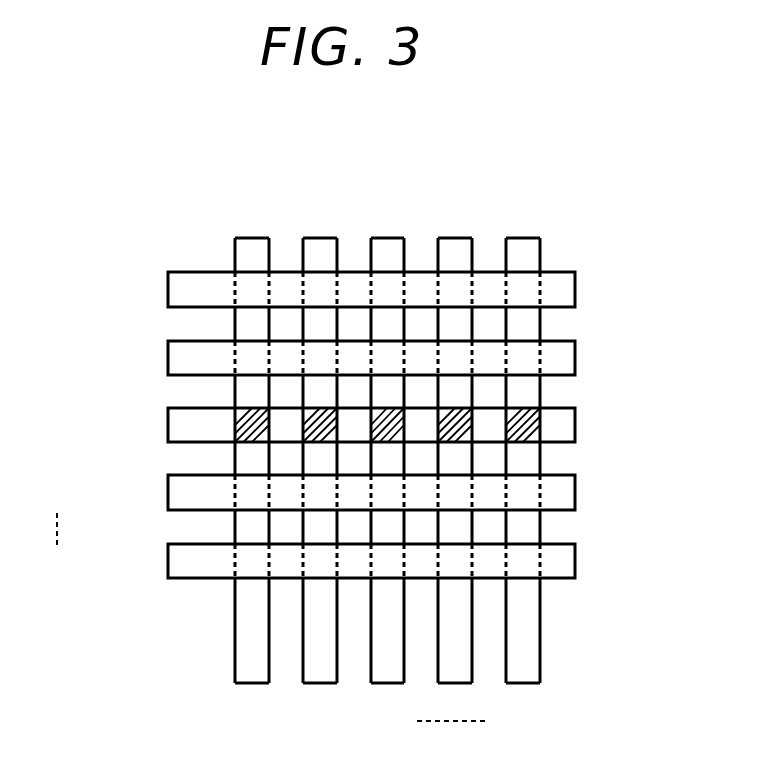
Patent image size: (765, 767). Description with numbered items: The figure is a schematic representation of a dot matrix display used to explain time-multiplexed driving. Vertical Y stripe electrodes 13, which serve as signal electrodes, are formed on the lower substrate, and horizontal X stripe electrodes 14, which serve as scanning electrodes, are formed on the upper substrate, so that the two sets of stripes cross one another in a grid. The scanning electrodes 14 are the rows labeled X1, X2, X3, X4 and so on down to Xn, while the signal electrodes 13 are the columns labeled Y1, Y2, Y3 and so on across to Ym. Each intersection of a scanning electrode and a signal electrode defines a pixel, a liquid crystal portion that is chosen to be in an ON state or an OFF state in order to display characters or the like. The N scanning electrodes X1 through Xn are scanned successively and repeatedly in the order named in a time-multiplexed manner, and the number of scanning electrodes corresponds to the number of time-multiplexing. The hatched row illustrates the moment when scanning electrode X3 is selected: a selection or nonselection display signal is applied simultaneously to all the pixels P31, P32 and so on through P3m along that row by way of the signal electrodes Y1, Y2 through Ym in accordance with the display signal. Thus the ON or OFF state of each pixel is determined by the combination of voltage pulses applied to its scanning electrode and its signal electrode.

The Y stripe electrodes 13 is at (360, 488).
The X stripe electrodes 14 is at (309, 390).
The pixel P31 is at (247, 423).
The pixel P32 is at (307, 438).
The pixel P3m is at (540, 410).
The scanning electrode X1 is at (309, 290).
The scanning electrode X2 is at (309, 358).
The scanning electrode X3 is at (309, 425).
The scanning electrode X4 is at (309, 495).
The scanning electrode Xn is at (309, 563).
The signal electrode Y1 is at (251, 488).
The signal electrode Y2 is at (318, 488).
The signal electrode Y3 is at (386, 488).
The signal electrode Ym is at (525, 488).